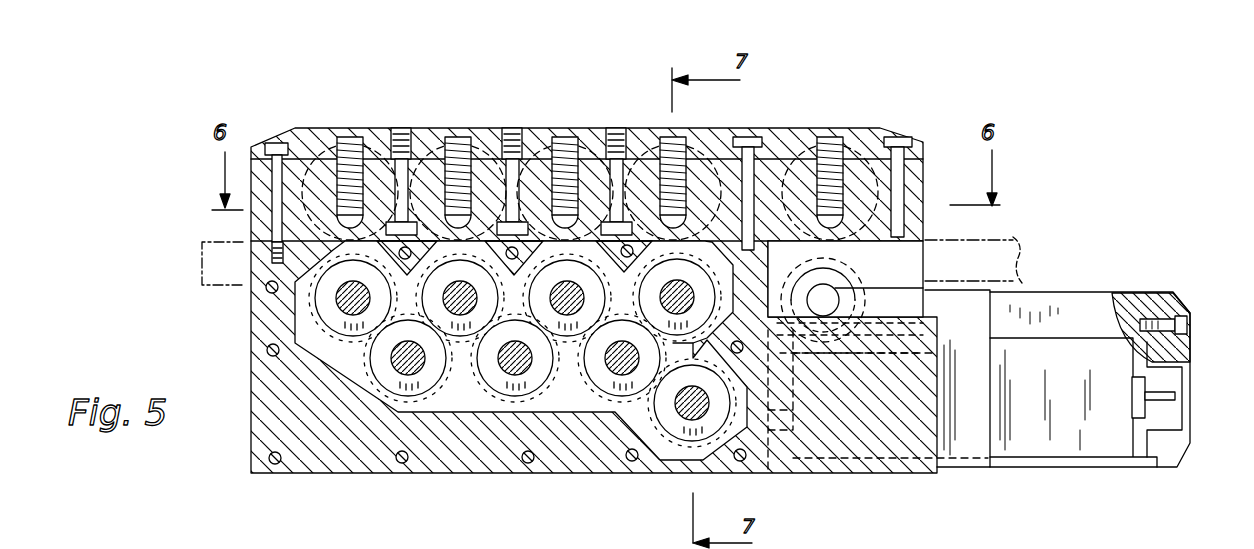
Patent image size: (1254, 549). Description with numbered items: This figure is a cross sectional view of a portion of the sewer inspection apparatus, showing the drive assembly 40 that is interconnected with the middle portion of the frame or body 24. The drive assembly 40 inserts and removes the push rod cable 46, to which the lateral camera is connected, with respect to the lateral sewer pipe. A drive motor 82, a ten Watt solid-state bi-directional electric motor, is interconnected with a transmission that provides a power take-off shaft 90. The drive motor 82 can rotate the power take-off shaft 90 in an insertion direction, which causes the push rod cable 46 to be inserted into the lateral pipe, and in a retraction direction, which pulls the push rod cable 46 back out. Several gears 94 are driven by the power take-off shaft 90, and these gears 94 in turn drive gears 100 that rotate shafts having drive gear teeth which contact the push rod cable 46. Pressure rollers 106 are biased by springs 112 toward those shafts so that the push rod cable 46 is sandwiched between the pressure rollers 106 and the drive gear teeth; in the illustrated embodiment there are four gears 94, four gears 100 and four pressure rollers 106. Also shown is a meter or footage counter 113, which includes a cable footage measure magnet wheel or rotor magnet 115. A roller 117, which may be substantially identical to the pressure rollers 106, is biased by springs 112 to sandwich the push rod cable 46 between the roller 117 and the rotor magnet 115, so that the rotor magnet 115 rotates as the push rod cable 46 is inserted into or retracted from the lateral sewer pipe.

The frame or body 24 is at (347, 458).
The drive assembly 40 is at (1015, 93).
The push rod cable 46 is at (1027, 232).
The drive motor 82 is at (1100, 353).
The power take-off shaft 90 is at (773, 411).
The gears 94 is at (383, 363).
The gears 100 is at (322, 304).
The pressure rollers 106 is at (316, 127).
The springs 112 is at (349, 145).
The meter or footage counter 113 is at (882, 267).
The rotor magnet 115 is at (932, 318).
The roller 117 is at (818, 124).